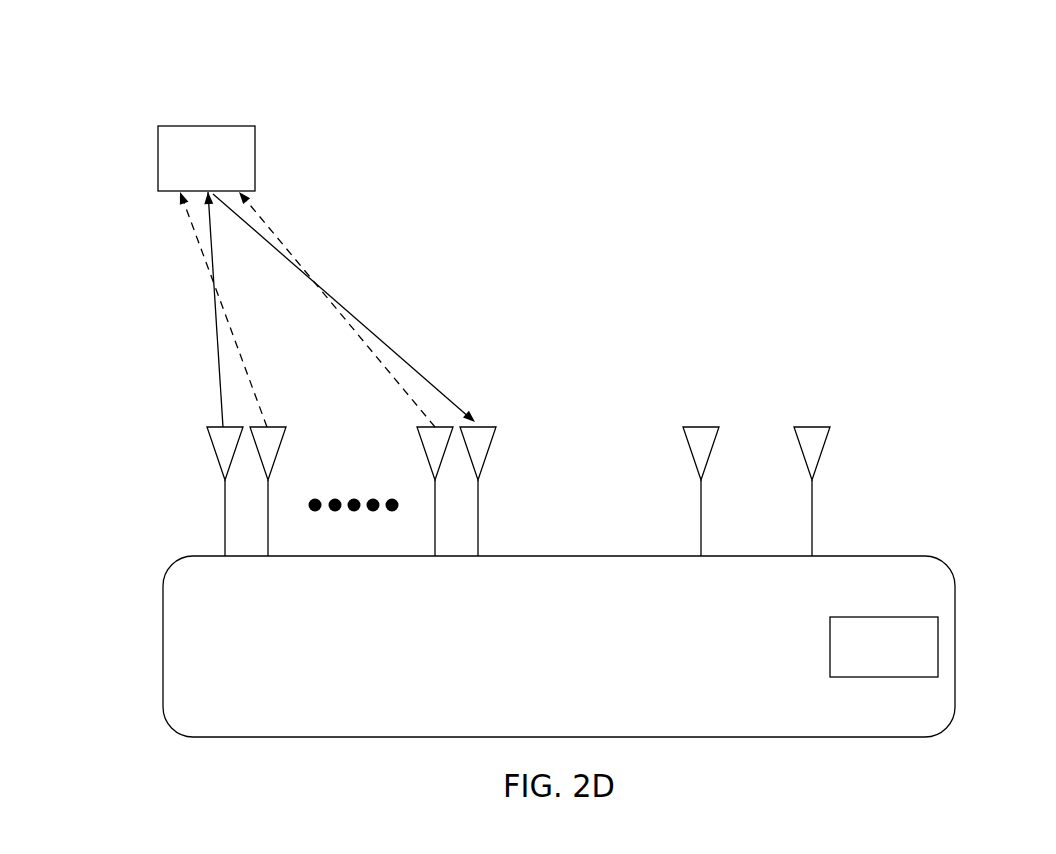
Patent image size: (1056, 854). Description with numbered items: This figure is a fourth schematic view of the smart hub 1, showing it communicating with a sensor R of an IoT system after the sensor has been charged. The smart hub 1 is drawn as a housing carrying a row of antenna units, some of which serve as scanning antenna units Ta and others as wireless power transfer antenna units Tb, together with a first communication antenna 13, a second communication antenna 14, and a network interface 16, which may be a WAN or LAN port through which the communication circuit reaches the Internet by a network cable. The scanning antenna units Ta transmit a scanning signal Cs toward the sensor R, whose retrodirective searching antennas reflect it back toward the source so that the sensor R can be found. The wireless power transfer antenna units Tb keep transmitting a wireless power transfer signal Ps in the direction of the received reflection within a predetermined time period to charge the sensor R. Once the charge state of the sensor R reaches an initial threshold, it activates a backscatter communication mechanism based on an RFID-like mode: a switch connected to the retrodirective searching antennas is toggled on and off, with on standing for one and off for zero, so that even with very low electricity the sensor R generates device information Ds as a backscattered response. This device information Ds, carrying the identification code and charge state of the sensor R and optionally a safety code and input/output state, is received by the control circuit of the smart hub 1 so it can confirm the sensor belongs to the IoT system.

The smart hub 1 is at (178, 553).
The first communication antenna 13 is at (703, 427).
The second communication antenna 14 is at (813, 427).
The network interface 16 is at (938, 640).
The sensor R is at (217, 125).
The scanning antenna unit Ta is at (208, 427).
The wireless power transfer antenna unit Tb is at (286, 432).
The scanning signal Cs is at (207, 309).
The wireless power transfer signal Ps is at (307, 309).
The device information Ds is at (344, 308).